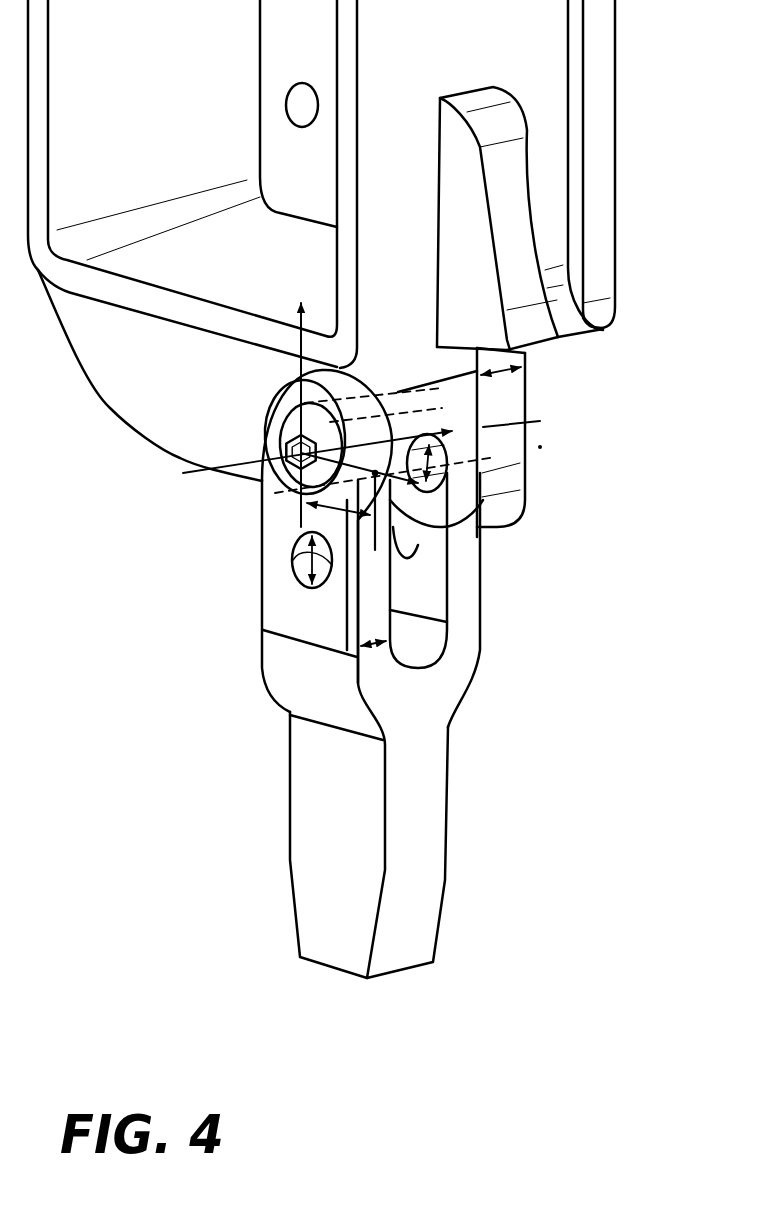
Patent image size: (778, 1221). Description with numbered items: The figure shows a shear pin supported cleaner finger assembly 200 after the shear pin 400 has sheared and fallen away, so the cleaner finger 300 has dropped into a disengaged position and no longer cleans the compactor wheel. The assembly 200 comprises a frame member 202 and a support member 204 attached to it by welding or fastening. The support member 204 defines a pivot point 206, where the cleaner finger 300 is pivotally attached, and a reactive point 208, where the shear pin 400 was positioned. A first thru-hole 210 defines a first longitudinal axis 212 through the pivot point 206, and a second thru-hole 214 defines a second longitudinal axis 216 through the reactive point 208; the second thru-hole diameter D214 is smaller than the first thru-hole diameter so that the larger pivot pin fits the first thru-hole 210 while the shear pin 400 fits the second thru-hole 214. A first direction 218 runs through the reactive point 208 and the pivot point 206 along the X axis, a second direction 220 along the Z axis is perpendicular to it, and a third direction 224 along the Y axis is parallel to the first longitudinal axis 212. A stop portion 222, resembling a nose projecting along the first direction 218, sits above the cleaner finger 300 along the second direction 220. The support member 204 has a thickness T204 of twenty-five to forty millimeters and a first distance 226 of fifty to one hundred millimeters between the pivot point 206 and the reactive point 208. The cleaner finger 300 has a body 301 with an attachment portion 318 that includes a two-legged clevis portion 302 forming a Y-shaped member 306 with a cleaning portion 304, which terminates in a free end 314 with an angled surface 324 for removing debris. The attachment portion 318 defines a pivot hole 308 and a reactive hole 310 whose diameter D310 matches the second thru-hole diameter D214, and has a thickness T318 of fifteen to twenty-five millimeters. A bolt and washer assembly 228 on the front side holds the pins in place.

The shear pin supported cleaner finger assembly 200 is at (621, 140).
The frame member 202 is at (476, 42).
The support member 204 is at (184, 415).
The pivot point 206 is at (300, 453).
The reactive point 208 is at (380, 476).
The first thru-hole 210 is at (414, 392).
The first longitudinal axis 212 is at (537, 421).
The second thru-hole 214 is at (441, 474).
The second longitudinal axis 216 is at (528, 448).
The first direction 218 is at (405, 500).
The second direction 220 is at (303, 350).
The stop portion 222 is at (547, 332).
The third direction 224 is at (413, 428).
The first distance 226 is at (350, 497).
The bolt and washer assembly 228 is at (280, 407).
The cleaner finger 300 is at (460, 838).
The body 301 is at (444, 679).
The clevis portion 302 is at (456, 656).
The cleaning portion 304 is at (405, 950).
The Y-shaped member 306 is at (414, 693).
The pivot hole 308 is at (362, 390).
The reactive hole 310 is at (330, 508).
The free end 314 is at (352, 977).
The attachment portion 318 is at (392, 385).
The angled surface 324 is at (387, 917).
The shear pin 400 is at (395, 422).
The second thru-hole diameter D214 is at (444, 466).
The reactive hole diameter D310 is at (307, 562).
The thickness of the support member T204 is at (502, 365).
The thickness of the attachment portion T318 is at (361, 620).